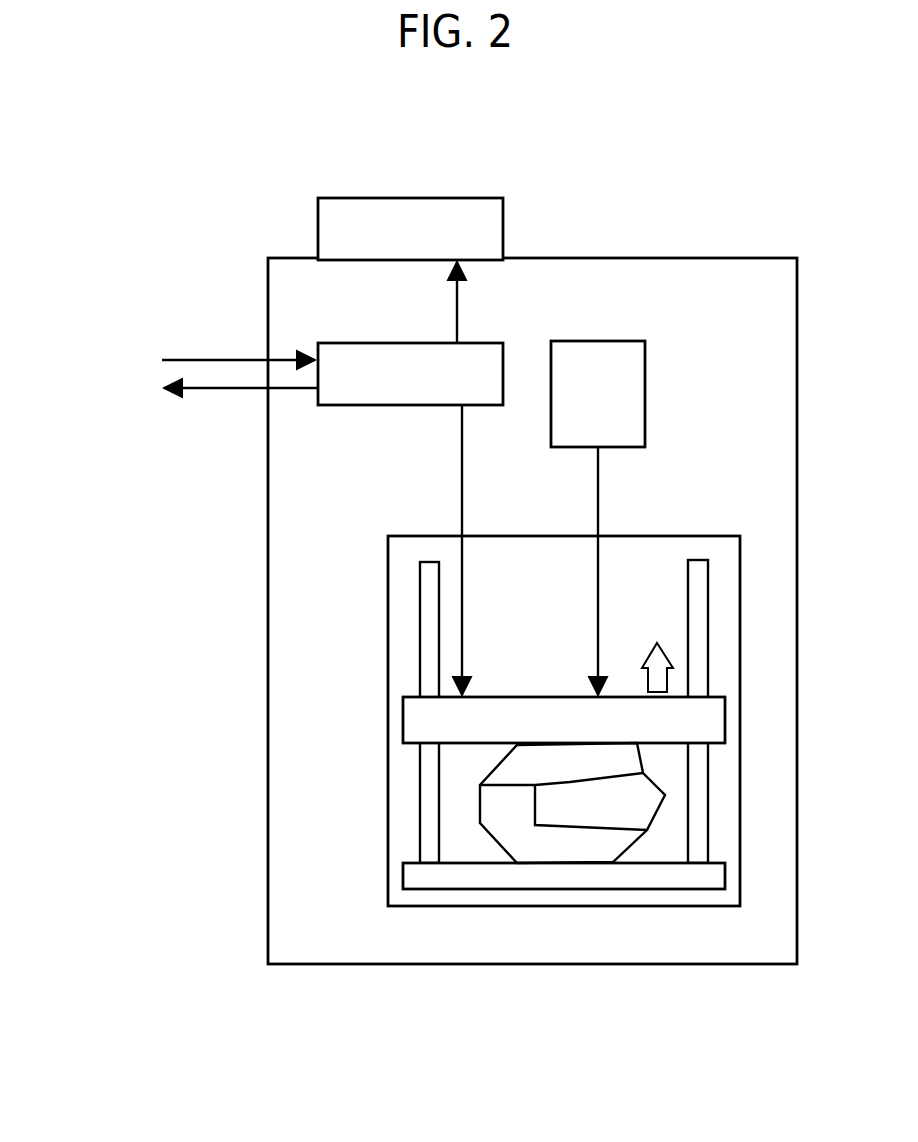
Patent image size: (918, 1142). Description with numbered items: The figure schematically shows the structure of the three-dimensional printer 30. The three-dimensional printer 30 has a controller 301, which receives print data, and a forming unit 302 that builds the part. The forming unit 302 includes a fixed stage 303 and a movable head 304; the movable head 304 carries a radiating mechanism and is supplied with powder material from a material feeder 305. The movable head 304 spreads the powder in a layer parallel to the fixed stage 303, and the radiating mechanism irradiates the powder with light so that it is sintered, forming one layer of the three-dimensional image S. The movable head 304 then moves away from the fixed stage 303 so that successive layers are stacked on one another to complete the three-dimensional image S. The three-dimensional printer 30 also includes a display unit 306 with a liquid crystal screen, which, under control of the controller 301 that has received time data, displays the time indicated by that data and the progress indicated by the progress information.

The 3D printer 30 is at (580, 256).
The controller 301 is at (350, 406).
The forming unit 302 is at (388, 595).
The fixed stage 303 is at (413, 877).
The movable head 304 is at (413, 722).
The material feeder 305 is at (638, 388).
The display unit 306 is at (337, 208).
The three-dimensional image S is at (535, 847).